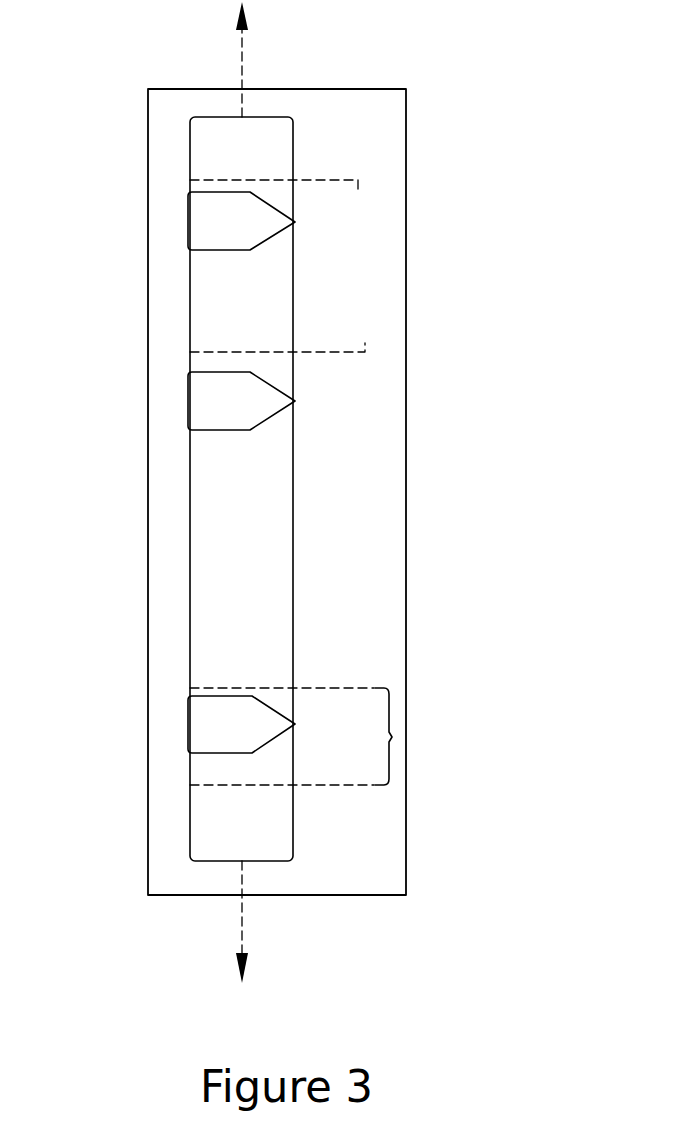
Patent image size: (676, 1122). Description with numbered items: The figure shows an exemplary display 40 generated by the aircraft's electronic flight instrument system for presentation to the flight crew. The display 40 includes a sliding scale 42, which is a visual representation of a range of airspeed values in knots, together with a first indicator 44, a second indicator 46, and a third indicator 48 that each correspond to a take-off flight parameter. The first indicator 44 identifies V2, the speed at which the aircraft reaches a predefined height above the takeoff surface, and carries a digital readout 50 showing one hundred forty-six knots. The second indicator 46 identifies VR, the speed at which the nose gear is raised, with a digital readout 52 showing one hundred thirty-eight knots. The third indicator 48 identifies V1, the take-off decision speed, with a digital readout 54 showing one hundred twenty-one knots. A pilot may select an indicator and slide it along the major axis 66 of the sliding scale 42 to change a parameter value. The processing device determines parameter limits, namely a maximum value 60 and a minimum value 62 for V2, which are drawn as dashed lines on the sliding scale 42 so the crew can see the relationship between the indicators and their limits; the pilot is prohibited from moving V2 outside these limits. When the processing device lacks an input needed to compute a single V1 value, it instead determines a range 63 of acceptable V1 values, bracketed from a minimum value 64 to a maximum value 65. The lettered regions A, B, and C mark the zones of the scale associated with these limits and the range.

The display 40 is at (442, 82).
The sliding scale 42 is at (188, 140).
The first indicator 44 is at (188, 212).
The second indicator 46 is at (188, 392).
The third indicator 48 is at (188, 716).
The digital readout 50 is at (212, 238).
The digital readout 52 is at (212, 418).
The digital readout 54 is at (212, 742).
The maximum value 60 is at (342, 180).
The minimum value 62 is at (343, 352).
The range 63 is at (392, 737).
The minimum value 64 is at (358, 785).
The maximum value 65 is at (362, 688).
The major axis 66 is at (242, 52).
The region A is at (425, 192).
The region B is at (415, 782).
The region C is at (415, 345).